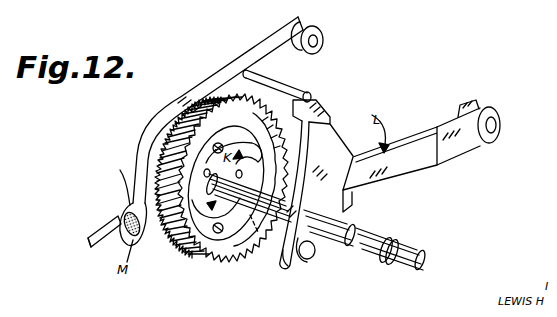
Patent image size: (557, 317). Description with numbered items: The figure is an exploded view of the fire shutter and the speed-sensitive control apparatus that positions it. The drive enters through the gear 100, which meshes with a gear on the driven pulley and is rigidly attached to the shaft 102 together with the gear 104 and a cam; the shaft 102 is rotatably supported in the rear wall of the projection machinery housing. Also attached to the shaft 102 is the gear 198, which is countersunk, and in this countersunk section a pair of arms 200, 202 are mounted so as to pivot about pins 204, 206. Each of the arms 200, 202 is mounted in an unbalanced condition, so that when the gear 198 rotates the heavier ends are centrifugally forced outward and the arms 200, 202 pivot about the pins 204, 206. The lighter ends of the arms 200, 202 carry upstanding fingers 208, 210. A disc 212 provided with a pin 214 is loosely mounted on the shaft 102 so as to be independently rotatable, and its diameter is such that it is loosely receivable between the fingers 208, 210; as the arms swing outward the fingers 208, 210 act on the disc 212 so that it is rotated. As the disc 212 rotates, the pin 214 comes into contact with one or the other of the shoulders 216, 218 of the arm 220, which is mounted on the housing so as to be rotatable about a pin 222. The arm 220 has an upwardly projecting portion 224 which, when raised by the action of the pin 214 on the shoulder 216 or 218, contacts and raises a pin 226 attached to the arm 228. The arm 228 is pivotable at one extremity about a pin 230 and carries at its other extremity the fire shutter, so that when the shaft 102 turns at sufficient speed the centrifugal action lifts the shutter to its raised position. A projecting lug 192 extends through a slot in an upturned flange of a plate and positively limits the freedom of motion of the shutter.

The gear 100 is at (211, 194).
The shaft 102 is at (352, 226).
The gear 104 is at (160, 167).
The projecting lug 192 is at (98, 236).
The gear 198 is at (250, 132).
The arm 200 is at (272, 148).
The arm 202 is at (190, 243).
The pin 204 is at (217, 142).
The pin 206 is at (223, 234).
The upstanding finger 208 is at (190, 127).
The upstanding finger 210 is at (248, 250).
The disc 212 is at (307, 262).
The pin 214 is at (314, 254).
The shoulder 216 is at (286, 268).
The shoulder 218 is at (352, 204).
The arm 220 is at (412, 146).
The pin 222 is at (501, 126).
The upwardly projecting portion 224 is at (316, 103).
The pin 226 is at (288, 80).
The arm 228 is at (272, 48).
The pin 230 is at (324, 36).